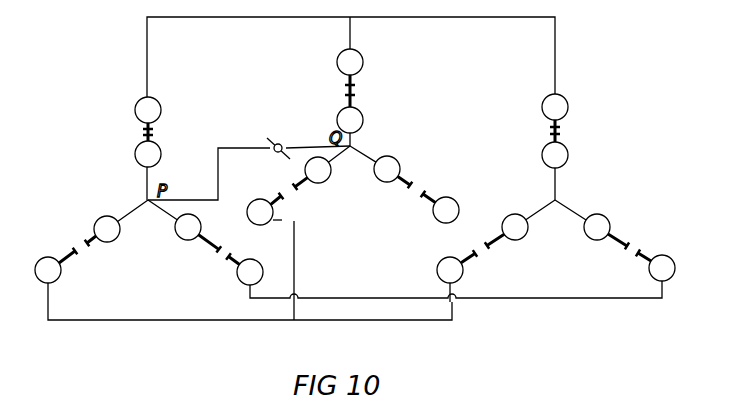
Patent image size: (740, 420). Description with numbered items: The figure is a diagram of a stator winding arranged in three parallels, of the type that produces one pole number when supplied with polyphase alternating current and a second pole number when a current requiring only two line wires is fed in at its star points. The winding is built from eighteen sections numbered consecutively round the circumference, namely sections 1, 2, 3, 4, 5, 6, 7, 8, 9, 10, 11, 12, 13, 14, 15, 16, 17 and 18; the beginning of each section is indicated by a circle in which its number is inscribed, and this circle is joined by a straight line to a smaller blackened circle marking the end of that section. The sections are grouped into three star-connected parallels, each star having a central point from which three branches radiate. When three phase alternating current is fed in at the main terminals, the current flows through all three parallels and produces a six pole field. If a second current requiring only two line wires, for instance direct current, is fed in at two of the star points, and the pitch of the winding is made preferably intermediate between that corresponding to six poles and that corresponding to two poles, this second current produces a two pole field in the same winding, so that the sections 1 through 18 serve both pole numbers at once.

The winding section 1 is at (555, 107).
The winding section 2 is at (515, 227).
The winding section 3 is at (662, 268).
The winding section 4 is at (350, 120).
The winding section 5 is at (48, 270).
The winding section 6 is at (387, 169).
The winding section 7 is at (148, 110).
The winding section 8 is at (318, 170).
The winding section 9 is at (250, 272).
The winding section 10 is at (555, 155).
The winding section 11 is at (450, 270).
The winding section 12 is at (597, 227).
The winding section 13 is at (350, 62).
The winding section 14 is at (107, 229).
The winding section 15 is at (446, 210).
The winding section 16 is at (148, 154).
The winding section 17 is at (260, 212).
The winding section 18 is at (188, 227).